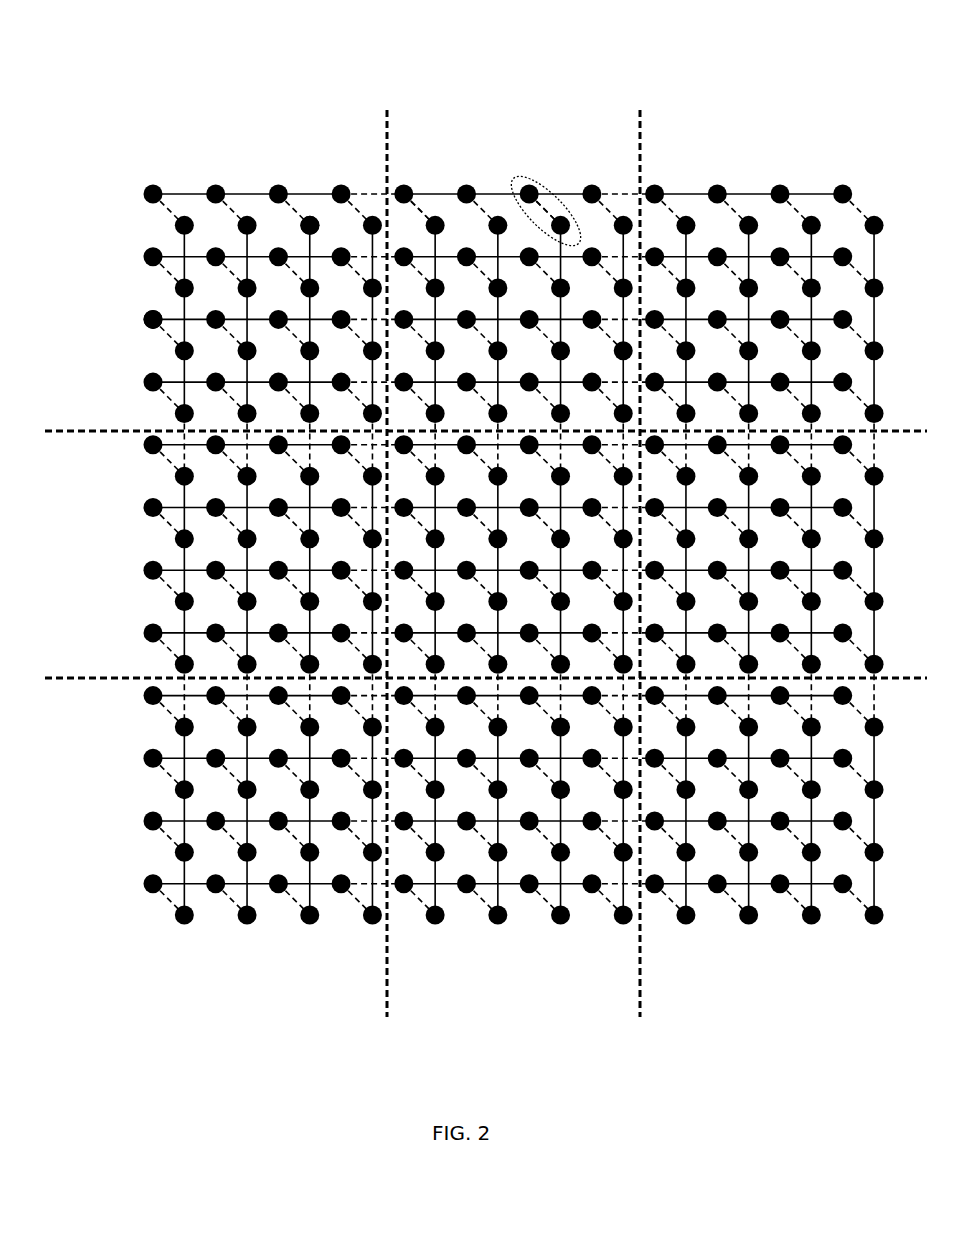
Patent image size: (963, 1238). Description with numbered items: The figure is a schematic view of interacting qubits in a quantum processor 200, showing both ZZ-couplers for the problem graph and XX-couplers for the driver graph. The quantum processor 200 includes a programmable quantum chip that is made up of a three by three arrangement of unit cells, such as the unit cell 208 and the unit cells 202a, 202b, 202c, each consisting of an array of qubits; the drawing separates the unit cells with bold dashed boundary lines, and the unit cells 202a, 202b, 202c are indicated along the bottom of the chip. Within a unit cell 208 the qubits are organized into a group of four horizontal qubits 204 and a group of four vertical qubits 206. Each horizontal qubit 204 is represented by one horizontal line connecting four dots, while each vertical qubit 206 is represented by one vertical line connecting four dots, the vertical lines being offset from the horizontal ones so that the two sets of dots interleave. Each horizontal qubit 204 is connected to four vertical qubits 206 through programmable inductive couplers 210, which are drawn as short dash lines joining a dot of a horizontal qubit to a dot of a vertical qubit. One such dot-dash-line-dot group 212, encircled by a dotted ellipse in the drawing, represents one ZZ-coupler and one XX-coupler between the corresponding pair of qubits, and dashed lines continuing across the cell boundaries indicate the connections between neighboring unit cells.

The quantum processor 200 is at (735, 66).
The unit cell 202a is at (144, 959).
The unit cell 202b is at (506, 959).
The unit cell 202c is at (773, 959).
The horizontal qubit 204 is at (122, 323).
The vertical qubit 206 is at (311, 199).
The unit cell 208 is at (130, 135).
The programmable inductive coupler 210 is at (428, 199).
The dot-dash-line-dot group 212 is at (554, 178).